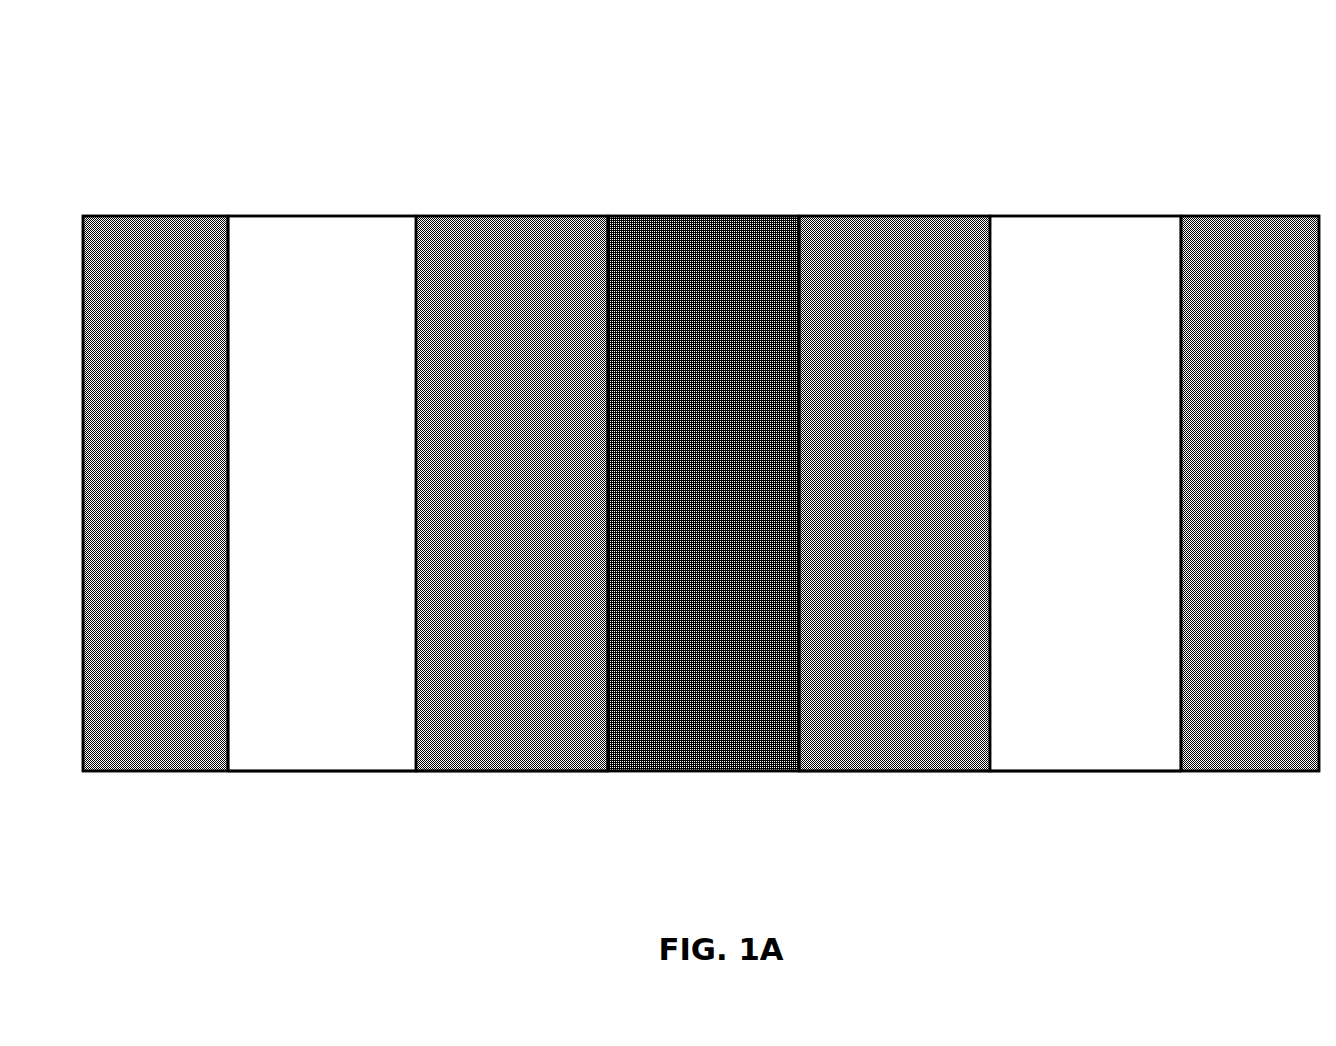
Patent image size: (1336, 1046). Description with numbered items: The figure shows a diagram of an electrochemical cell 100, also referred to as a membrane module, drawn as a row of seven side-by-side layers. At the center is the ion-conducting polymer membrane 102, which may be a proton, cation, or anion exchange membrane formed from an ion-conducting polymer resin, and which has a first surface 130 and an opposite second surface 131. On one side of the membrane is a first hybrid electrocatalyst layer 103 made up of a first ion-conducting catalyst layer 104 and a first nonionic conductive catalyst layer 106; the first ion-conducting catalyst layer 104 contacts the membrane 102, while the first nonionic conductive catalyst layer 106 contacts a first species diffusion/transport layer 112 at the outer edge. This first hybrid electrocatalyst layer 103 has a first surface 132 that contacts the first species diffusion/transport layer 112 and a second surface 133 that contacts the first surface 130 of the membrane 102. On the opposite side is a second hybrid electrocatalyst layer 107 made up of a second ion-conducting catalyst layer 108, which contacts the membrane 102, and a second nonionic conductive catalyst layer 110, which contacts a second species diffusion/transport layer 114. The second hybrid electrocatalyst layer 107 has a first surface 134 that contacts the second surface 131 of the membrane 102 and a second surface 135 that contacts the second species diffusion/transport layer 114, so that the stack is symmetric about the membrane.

The electrochemical cell 100 is at (298, 84).
The ion-conducting polymer membrane 102 is at (739, 215).
The first hybrid electrocatalyst layer 103 is at (799, 771).
The first ion-conducting catalyst layer 104 is at (912, 215).
The first nonionic conductive catalyst layer 106 is at (1117, 215).
The second hybrid electrocatalyst layer 107 is at (228, 771).
The second ion-conducting catalyst layer 108 is at (529, 215).
The second nonionic conductive catalyst layer 110 is at (354, 215).
The first species diffusion/transport layer 112 is at (1257, 215).
The second species diffusion/transport layer 114 is at (191, 215).
The first surface of the ion-conducting polymer membrane 130 is at (799, 672).
The second surface of the ion-conducting polymer membrane 131 is at (608, 672).
The first surface of the first hybrid electrocatalyst layer 132 is at (1181, 603).
The second surface of the first hybrid electrocatalyst layer 133 is at (799, 595).
The first surface of the second hybrid electrocatalyst layer 134 is at (608, 595).
The second surface of the second hybrid electrocatalyst layer 135 is at (228, 597).